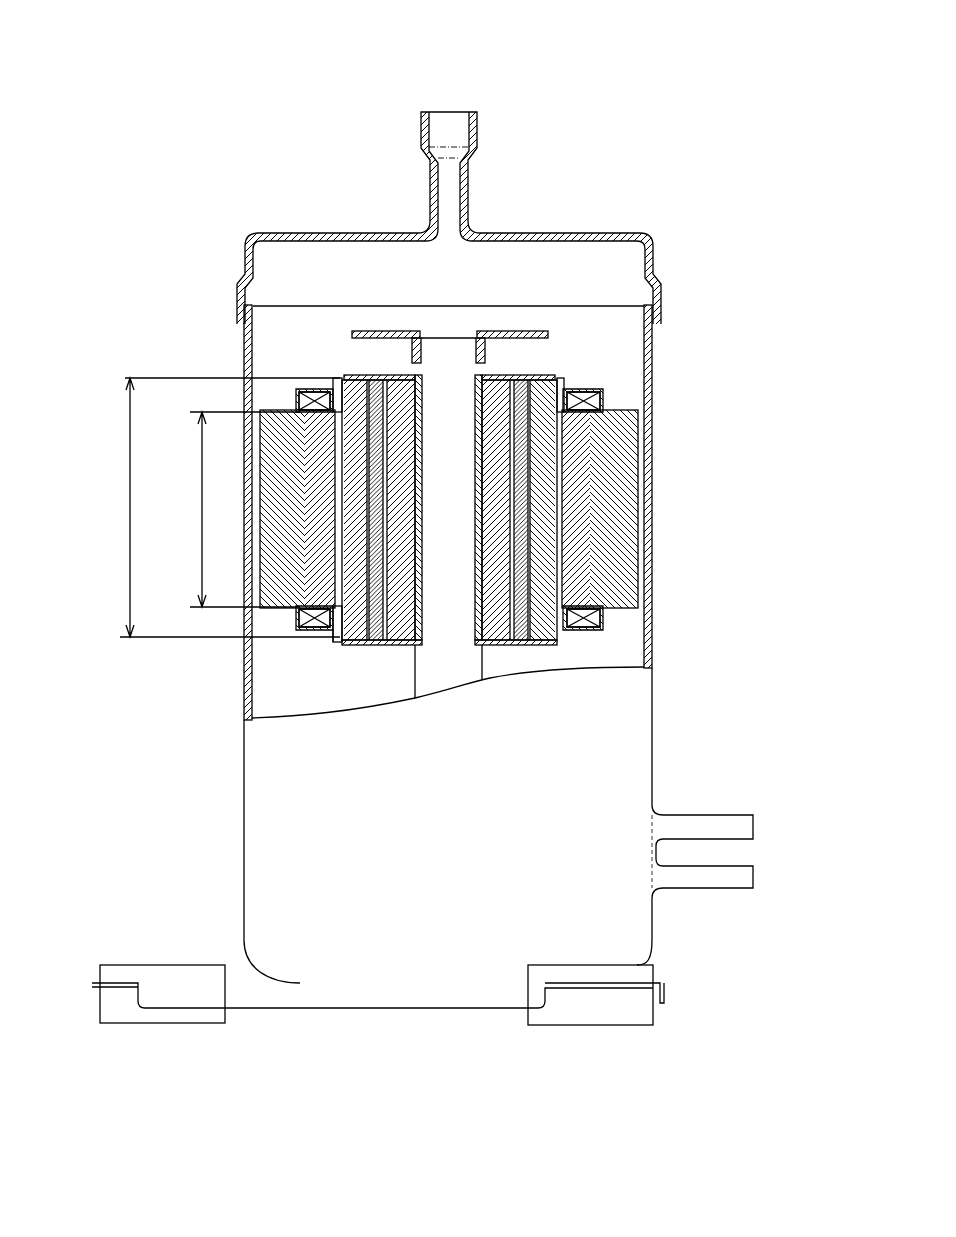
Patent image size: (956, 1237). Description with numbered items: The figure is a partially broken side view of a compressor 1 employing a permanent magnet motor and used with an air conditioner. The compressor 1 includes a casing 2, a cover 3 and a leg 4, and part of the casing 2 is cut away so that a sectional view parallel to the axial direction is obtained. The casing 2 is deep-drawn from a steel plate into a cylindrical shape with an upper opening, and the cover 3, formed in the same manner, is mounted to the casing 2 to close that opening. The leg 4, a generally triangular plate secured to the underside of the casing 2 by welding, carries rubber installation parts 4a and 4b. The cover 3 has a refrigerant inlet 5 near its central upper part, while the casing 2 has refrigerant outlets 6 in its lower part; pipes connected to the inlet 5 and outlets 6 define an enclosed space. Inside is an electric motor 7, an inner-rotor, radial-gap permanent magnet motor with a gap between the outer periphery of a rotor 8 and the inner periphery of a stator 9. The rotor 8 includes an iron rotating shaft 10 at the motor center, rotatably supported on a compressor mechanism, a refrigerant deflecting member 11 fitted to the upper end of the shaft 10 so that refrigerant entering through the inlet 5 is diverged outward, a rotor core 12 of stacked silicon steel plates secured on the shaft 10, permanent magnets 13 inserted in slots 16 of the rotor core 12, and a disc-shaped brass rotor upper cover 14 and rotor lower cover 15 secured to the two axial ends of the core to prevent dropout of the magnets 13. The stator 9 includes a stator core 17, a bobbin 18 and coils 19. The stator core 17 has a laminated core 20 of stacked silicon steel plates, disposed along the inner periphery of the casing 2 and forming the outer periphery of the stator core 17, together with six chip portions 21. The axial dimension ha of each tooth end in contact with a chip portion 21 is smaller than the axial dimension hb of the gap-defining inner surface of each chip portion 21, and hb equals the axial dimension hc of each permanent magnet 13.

The compressor 1 is at (438, 52).
The casing 2 is at (244, 764).
The cover 3 is at (245, 255).
The leg 4 is at (383, 1010).
The rubber installation part 4a is at (157, 1024).
The rubber installation part 4b is at (589, 1026).
The refrigerant inlet 5 is at (455, 112).
The refrigerant outlets 6 is at (755, 827).
The electric motor 7 is at (448, 289).
The rotor 8 is at (606, 352).
The stator 9 is at (291, 351).
The rotating shaft 10 is at (458, 338).
The refrigerant deflecting member 11 is at (528, 332).
The rotor core 12 is at (548, 378).
The permanent magnets 13 is at (398, 378).
The rotor upper cover 14 is at (482, 376).
The rotor lower cover 15 is at (545, 644).
The slots 16 is at (407, 633).
The stator core 17 is at (281, 681).
The bobbin 18 is at (297, 400).
The coils 19 is at (314, 391).
The laminated core 20 is at (270, 608).
The chip portions 21 is at (333, 642).